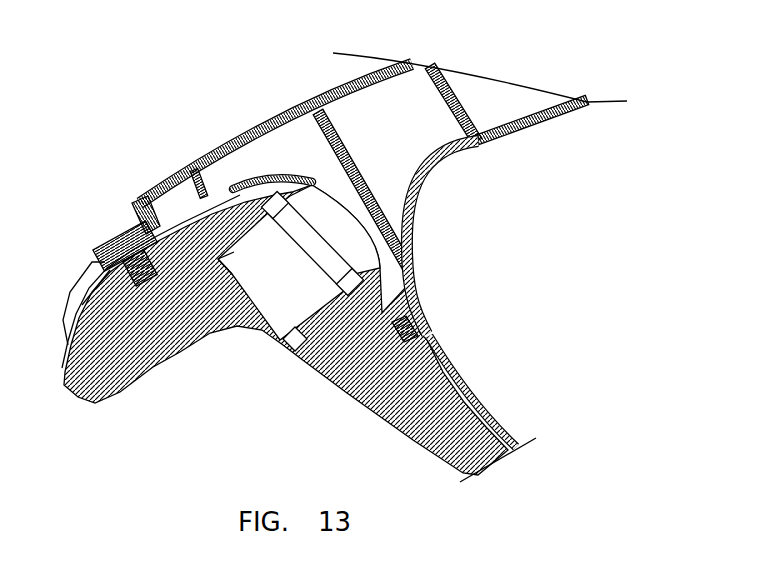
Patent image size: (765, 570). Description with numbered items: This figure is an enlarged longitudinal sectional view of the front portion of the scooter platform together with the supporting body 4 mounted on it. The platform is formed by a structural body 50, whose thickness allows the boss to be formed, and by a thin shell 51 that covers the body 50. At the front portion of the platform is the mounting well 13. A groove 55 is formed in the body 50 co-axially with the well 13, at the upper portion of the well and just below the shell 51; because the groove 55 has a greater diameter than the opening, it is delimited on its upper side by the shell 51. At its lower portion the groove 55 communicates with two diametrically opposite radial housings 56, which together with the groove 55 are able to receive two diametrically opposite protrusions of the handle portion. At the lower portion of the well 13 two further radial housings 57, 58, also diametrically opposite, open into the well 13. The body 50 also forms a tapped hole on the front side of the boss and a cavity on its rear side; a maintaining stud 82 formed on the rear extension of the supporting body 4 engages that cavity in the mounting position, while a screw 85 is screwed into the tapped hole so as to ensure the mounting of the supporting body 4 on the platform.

The supporting body 4 is at (325, 86).
The mounting well 13 is at (323, 286).
The structural body 50 is at (155, 367).
The shell 51 is at (495, 431).
The groove 55 is at (298, 196).
The radial housings 56 is at (221, 187).
The radial housing 57 is at (288, 342).
The radial housing 58 is at (233, 276).
The maintaining stud 82 is at (420, 338).
The screw 85 is at (104, 217).